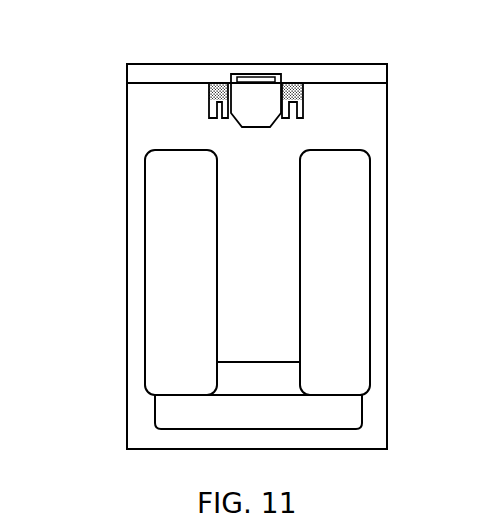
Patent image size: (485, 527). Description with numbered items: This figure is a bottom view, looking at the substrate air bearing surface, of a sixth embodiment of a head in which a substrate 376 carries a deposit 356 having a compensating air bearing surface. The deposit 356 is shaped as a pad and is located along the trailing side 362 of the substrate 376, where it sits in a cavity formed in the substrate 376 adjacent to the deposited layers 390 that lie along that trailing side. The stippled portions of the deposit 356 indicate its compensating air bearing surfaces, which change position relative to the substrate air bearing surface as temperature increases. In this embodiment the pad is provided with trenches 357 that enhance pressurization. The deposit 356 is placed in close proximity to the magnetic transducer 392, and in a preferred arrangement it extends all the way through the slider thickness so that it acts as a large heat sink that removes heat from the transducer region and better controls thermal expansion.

The deposited layers 390 is at (372, 75).
The trailing side 362 is at (142, 78).
The substrate 376 is at (140, 146).
The deposit 356 is at (207, 95).
The trenches 357 is at (219, 118).
The magnetic transducer 392 is at (253, 84).